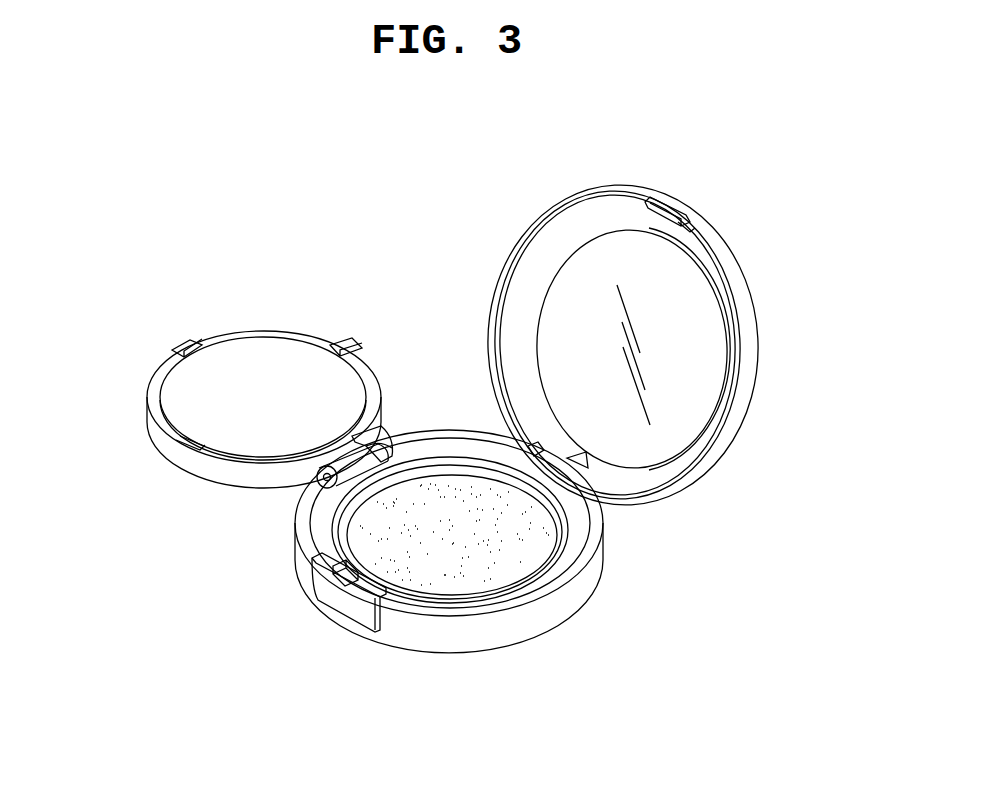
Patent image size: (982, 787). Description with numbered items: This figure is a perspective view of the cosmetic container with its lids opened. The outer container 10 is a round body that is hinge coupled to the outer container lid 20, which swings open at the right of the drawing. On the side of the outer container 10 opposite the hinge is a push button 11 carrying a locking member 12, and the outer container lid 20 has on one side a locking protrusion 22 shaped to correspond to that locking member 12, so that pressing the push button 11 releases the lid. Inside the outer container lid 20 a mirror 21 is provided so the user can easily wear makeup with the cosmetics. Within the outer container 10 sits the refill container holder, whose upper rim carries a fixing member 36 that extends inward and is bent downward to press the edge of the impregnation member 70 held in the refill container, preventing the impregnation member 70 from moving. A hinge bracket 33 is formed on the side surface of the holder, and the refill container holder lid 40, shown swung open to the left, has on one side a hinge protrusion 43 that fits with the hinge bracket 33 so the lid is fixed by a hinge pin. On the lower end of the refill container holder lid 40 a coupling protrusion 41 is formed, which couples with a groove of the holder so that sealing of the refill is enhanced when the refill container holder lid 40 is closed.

The outer container 10 is at (440, 636).
The push button 11 is at (345, 606).
The locking member 12 is at (340, 578).
The outer container lid 20 is at (757, 378).
The mirror 21 is at (705, 346).
The locking protrusion 22 is at (688, 220).
The hinge bracket 33 is at (330, 486).
The fixing member 36 is at (553, 532).
The refill container holder lid 40 is at (157, 443).
The coupling protrusion 41 is at (183, 345).
The hinge protrusion 43 is at (359, 452).
The impregnation member 70 is at (502, 553).